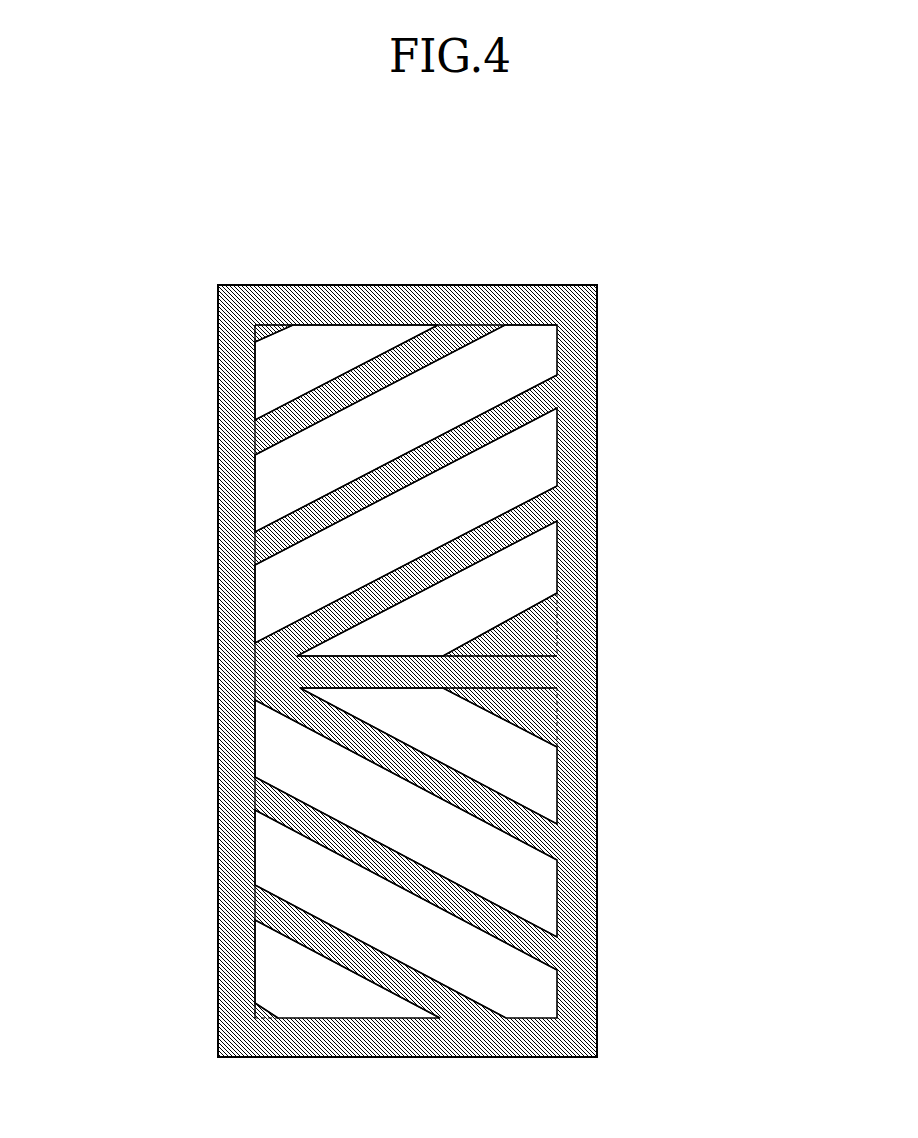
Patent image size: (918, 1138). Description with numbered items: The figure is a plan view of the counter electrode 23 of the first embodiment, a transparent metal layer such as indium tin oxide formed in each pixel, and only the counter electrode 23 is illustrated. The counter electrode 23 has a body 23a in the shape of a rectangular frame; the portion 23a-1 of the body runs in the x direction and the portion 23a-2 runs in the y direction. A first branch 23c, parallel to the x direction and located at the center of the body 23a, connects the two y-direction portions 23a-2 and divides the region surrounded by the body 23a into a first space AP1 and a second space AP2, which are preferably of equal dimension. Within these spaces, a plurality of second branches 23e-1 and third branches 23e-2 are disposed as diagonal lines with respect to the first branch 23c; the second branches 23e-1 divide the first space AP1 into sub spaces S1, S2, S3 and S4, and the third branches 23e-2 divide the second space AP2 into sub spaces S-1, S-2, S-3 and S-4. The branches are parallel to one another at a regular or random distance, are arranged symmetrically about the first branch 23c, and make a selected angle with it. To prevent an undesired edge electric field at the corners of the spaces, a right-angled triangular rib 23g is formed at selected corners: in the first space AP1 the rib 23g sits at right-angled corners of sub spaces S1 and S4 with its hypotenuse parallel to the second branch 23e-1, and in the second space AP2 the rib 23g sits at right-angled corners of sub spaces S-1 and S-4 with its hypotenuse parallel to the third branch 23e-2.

The counter electrode 23 is at (491, 268).
The body 23a is at (573, 360).
The portion of the body in the x direction 23a-1 is at (567, 303).
The portion of the body in the y direction 23a-2 is at (248, 640).
The first branch 23c is at (453, 654).
The second branch 23e-1 is at (437, 362).
The third branch 23e-2 is at (470, 1007).
The rib 23g is at (262, 324).
The first space AP1 is at (334, 490).
The second space AP2 is at (334, 853).
The sub space 1 of the first space S1 is at (346, 372).
The sub space 2 of the first space S2 is at (406, 428).
The sub space 3 of the first space S3 is at (406, 525).
The sub space 4 of the first space S4 is at (427, 588).
The sub space 1 of the second space S-1 is at (428, 756).
The sub space 2 of the second space S-2 is at (406, 818).
The sub space 3 of the second space S-3 is at (406, 914).
The sub space 4 of the second space S-4 is at (347, 969).